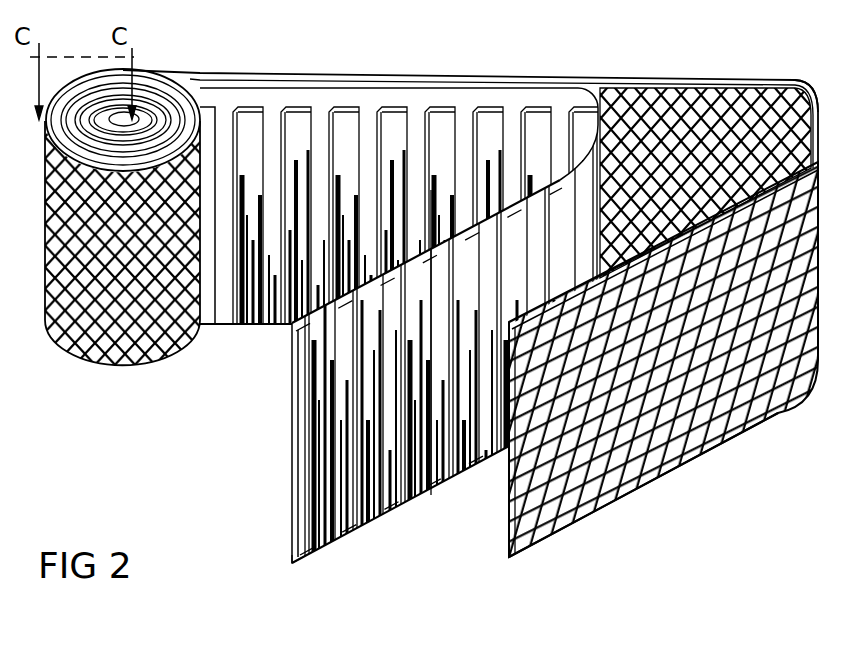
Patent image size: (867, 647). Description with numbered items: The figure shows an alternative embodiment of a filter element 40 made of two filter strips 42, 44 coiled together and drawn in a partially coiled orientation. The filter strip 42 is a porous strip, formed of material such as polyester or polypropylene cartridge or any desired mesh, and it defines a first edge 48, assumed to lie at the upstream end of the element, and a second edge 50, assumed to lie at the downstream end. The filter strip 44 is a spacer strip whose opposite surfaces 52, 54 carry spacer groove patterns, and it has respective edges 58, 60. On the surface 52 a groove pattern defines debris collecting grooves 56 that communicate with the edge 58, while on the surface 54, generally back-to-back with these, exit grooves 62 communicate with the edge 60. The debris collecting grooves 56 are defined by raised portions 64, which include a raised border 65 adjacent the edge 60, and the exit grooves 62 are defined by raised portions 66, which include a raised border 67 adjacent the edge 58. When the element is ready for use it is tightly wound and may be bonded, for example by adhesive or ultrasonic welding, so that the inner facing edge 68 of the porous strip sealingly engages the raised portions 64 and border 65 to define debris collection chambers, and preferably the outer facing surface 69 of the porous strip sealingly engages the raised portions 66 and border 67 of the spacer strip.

The filter element 40 is at (138, 112).
The filter strip 42 is at (543, 538).
The filter strip 44 is at (300, 553).
The first edge 48 is at (822, 112).
The second edge 50 is at (733, 437).
The surface 52 is at (337, 503).
The surface 54 is at (287, 323).
The debris collecting grooves 56 is at (366, 508).
The edge 58 is at (303, 92).
The edge 60 is at (292, 562).
The exit grooves 62 is at (246, 325).
The raised portions 64 is at (355, 507).
The raised border 65 is at (443, 490).
The raised portions 66 is at (216, 323).
The raised border 67 is at (230, 100).
The inner facing edge 68 is at (647, 137).
The outer facing surface 69 is at (88, 307).